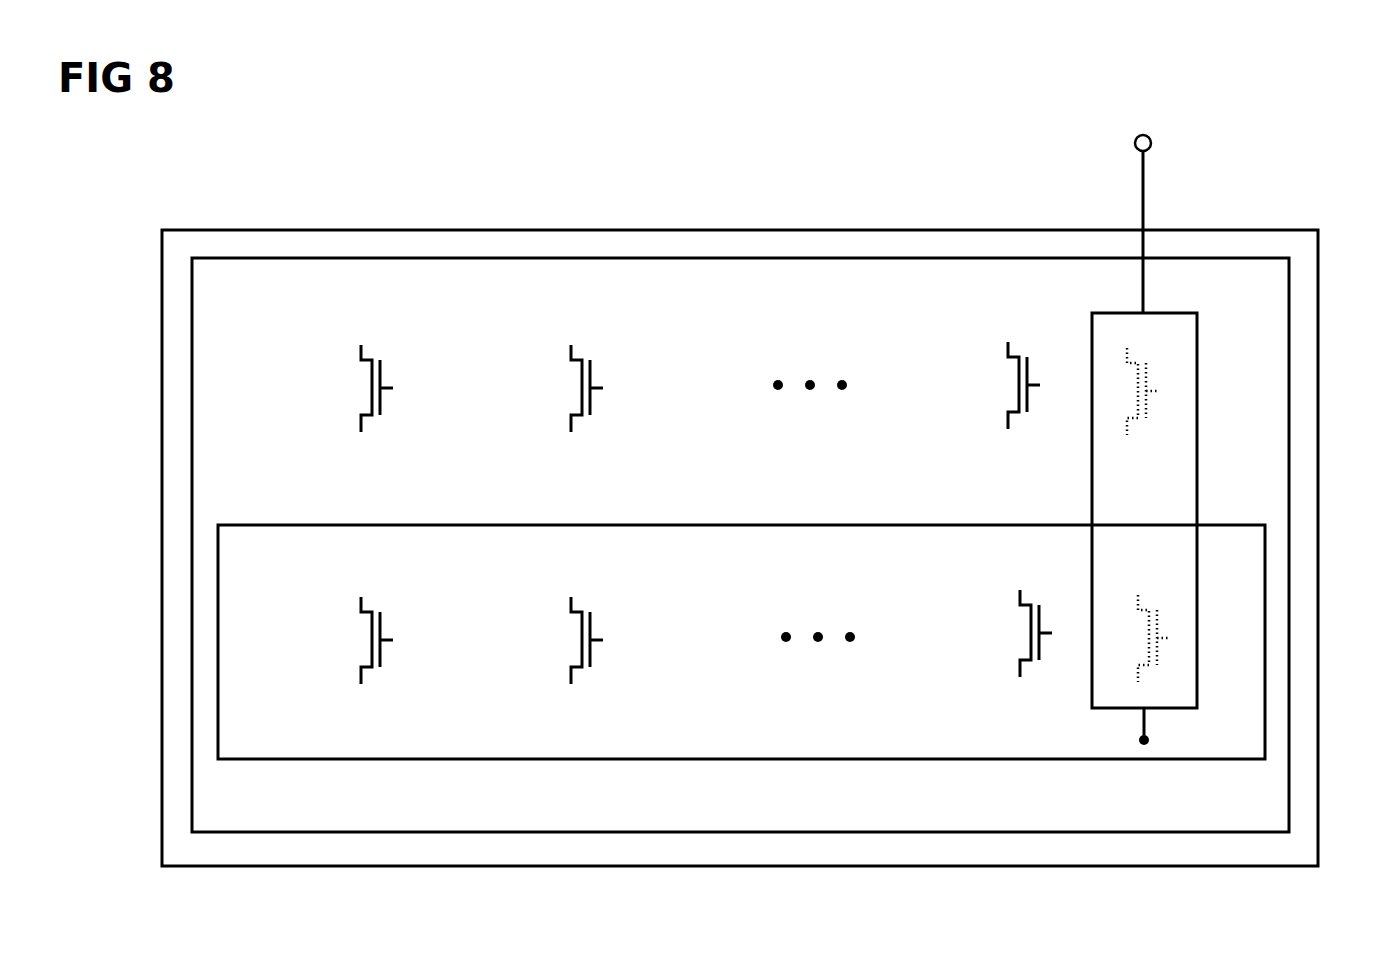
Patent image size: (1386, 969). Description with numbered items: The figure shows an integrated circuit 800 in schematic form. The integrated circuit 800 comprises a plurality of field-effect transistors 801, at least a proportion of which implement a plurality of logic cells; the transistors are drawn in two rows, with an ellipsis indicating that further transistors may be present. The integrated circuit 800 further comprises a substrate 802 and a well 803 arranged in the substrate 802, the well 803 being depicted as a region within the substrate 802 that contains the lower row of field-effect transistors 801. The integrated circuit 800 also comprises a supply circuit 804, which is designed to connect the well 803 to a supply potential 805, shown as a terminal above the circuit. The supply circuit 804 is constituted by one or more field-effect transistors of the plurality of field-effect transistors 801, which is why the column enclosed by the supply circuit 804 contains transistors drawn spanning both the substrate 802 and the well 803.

The integrated circuit 800 is at (1295, 229).
The field-effect transistors 801 is at (378, 351).
The substrate 802 is at (758, 816).
The well 803 is at (755, 741).
The supply circuit 804 is at (1197, 428).
The supply potential 805 is at (1150, 137).